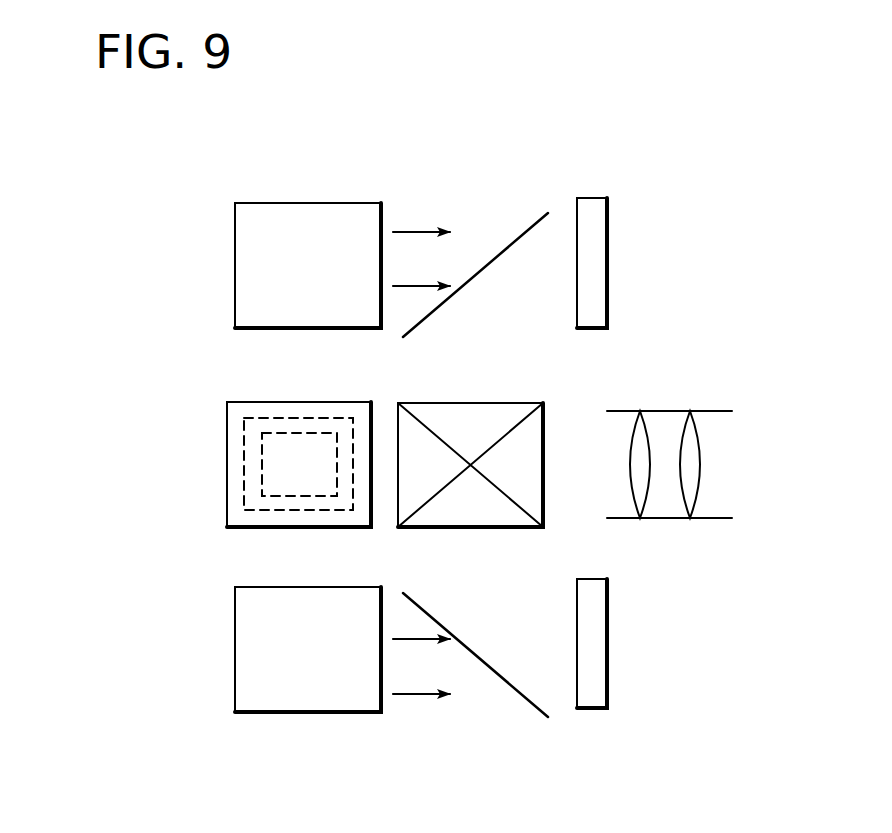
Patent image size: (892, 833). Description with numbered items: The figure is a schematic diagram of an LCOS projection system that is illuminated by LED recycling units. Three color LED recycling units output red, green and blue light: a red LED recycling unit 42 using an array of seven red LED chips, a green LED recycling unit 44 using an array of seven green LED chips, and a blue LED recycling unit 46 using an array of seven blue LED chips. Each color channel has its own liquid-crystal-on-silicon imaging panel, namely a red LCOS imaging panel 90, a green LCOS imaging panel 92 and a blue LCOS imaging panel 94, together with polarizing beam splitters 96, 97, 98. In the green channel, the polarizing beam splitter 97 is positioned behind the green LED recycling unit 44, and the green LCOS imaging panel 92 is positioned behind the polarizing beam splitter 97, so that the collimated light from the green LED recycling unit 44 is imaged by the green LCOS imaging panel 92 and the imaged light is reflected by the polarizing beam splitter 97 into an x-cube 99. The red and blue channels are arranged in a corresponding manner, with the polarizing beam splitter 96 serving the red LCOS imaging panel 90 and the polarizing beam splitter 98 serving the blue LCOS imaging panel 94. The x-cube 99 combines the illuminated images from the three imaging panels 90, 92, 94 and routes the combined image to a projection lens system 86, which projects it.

The red LED recycling unit 42 is at (235, 255).
The green LED recycling unit 44 is at (227, 513).
The blue LED recycling unit 46 is at (235, 654).
The projection lens system 86 is at (685, 527).
The red LCOS imaging panel 90 is at (608, 242).
The green LCOS imaging panel 92 is at (262, 447).
The blue LCOS imaging panel 94 is at (608, 665).
The polarizing beam splitter 96 is at (515, 240).
The polarizing beam splitter 97 is at (244, 467).
The polarizing beam splitter 98 is at (520, 693).
The x-cube 99 is at (543, 438).